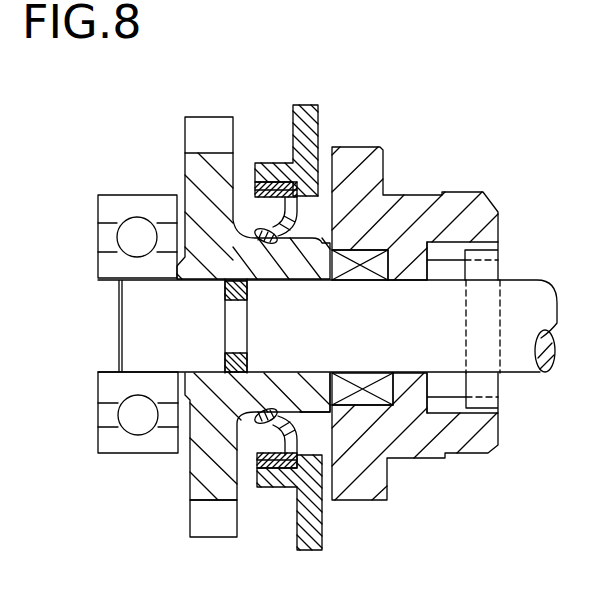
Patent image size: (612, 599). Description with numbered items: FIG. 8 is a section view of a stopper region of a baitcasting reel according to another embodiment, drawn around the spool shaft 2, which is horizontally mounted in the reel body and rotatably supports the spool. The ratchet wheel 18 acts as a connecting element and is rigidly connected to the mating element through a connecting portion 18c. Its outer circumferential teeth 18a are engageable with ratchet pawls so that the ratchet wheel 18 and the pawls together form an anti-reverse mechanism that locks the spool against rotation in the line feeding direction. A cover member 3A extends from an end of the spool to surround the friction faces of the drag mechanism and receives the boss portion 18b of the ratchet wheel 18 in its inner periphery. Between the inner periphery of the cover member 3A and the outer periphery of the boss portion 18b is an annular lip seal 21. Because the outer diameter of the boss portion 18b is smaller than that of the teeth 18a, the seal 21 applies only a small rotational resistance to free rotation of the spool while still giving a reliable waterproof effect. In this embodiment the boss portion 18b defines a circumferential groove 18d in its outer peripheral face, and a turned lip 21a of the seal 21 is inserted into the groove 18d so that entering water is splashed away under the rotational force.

The spool shaft 2 is at (531, 287).
The cover member 3A is at (320, 114).
The ratchet wheel 18 is at (195, 473).
The outer circumferential teeth 18a is at (199, 118).
The boss portion 18b is at (200, 385).
The connecting portion 18c is at (368, 274).
The circumferential groove 18d is at (322, 405).
The annular lip seal 21 is at (272, 163).
The turned lip 21a is at (266, 230).